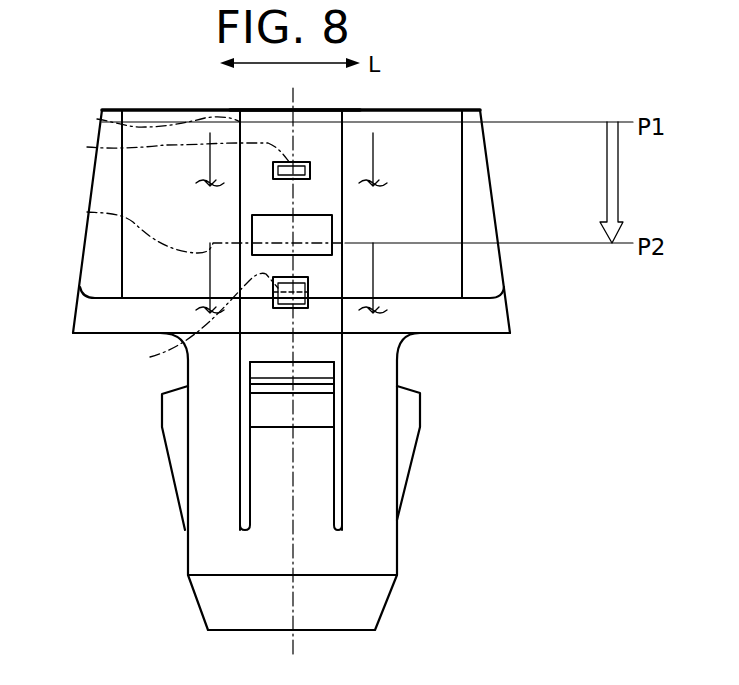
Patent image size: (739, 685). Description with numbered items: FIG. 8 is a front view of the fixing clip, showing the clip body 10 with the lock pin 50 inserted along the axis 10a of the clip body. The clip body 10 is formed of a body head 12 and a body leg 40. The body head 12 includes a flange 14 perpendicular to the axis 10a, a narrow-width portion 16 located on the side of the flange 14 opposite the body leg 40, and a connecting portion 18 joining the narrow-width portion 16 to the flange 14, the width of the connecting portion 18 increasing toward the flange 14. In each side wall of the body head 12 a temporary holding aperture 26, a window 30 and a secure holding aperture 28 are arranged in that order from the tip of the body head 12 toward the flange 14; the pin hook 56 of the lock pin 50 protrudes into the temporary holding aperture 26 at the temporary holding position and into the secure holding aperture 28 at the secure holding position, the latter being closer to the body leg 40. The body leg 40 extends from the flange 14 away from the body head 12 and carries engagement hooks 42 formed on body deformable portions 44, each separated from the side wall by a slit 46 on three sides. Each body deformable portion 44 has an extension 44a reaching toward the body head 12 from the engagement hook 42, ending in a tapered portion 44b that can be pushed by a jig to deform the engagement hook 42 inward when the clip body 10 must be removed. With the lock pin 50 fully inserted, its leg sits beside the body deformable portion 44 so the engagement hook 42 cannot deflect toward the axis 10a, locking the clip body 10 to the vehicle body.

The clip body 10 is at (482, 110).
The axis of the clip body 10a is at (292, 105).
The body head 12 is at (487, 152).
The flange 14 is at (510, 326).
The narrow-width portion 16 is at (140, 172).
The connecting portion 18 is at (155, 275).
The temporary holding aperture 26 is at (300, 162).
The secure holding aperture 28 is at (310, 300).
The window 30 is at (320, 232).
The body leg 40 is at (358, 548).
The engagement hook 42 is at (160, 405).
The body deformable portion 44 is at (305, 473).
The extension 44a is at (307, 382).
The tapered portion 44b is at (303, 372).
The slit 46 is at (340, 466).
The lock pin 50 is at (97, 119).
The pin hook 56 is at (173, 253).